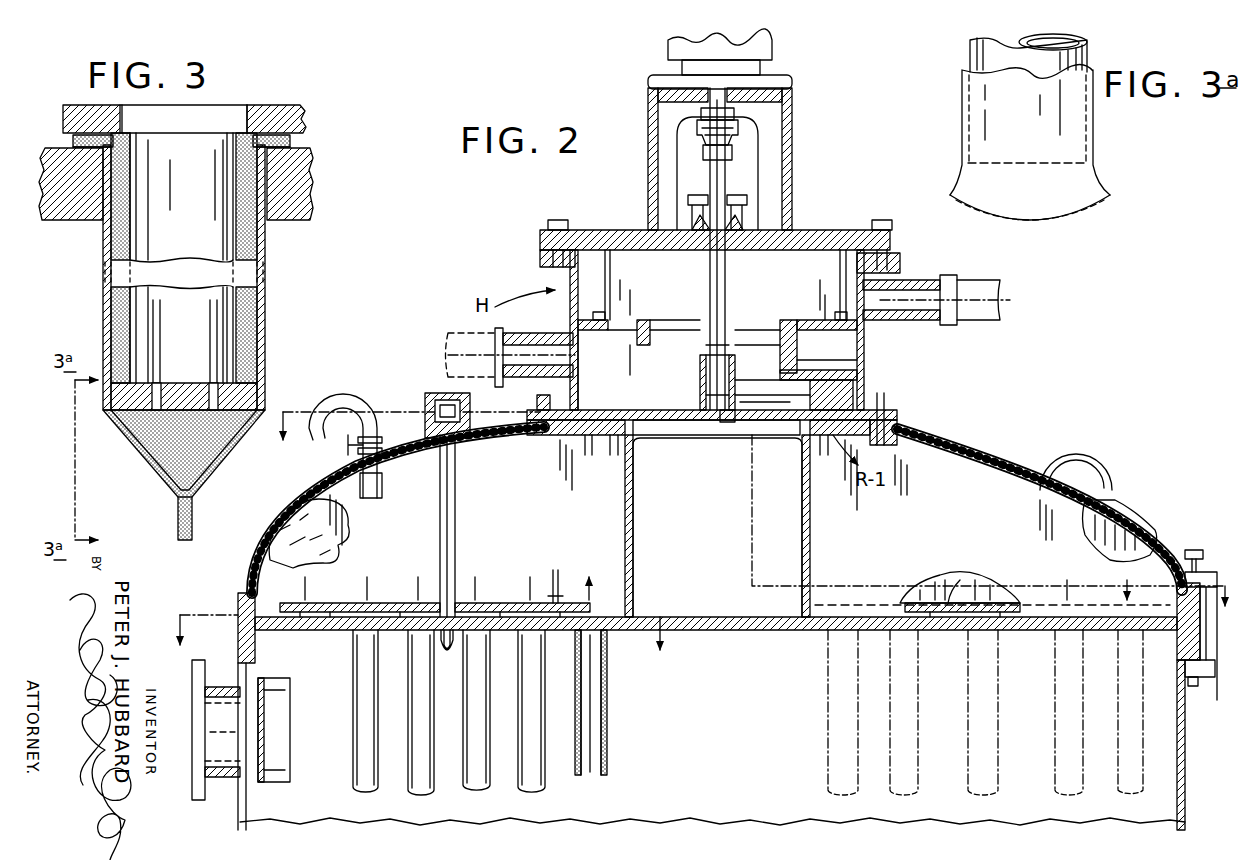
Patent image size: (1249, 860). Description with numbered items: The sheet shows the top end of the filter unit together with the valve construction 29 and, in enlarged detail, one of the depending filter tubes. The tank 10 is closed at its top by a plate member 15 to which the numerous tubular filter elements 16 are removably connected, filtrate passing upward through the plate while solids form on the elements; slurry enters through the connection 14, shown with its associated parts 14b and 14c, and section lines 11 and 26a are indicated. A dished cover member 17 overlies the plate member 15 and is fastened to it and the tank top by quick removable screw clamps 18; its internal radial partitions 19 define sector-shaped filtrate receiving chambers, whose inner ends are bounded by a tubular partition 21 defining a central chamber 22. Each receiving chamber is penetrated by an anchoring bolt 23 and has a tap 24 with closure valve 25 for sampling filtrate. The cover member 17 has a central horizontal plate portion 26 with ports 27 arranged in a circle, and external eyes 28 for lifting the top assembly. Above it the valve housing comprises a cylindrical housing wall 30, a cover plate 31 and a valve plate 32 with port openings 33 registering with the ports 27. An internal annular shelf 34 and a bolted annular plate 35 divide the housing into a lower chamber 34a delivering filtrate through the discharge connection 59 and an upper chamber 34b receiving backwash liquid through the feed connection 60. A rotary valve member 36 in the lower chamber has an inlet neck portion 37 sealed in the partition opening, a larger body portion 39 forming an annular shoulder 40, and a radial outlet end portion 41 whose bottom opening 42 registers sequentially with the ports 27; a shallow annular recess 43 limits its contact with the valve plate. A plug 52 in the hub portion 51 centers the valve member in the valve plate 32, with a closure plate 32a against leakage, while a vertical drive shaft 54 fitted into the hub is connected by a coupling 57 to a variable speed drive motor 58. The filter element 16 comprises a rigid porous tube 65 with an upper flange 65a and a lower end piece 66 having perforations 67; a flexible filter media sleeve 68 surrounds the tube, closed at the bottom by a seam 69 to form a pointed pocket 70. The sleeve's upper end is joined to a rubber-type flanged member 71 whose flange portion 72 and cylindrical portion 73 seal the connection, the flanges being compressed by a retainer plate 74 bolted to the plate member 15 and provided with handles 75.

In FIG. 2, the vessel tank 10 is at (1197, 730).
In FIG. 2, the section line 11 is at (424, 619).
In FIG. 2, the connection 14 is at (228, 778).
In FIG. 2, the pipe sleeve 14b is at (275, 678).
In FIG. 2, the sleeve flange 14c is at (275, 782).
In FIG. 2, the plate member 15 is at (733, 630).
In FIG. 3, the tubular filter element 16 is at (270, 352).
In FIG. 2, the tubular filter element 16 is at (525, 768).
In FIG. 2, the dished cover member 17 is at (985, 452).
In FIG. 2, the screw clamp 18 is at (1207, 677).
In FIG. 2, the radial partition 19 is at (335, 540).
In FIG. 2, the tubular partition 21 is at (634, 486).
In FIG. 2, the central chamber 22 is at (708, 545).
In FIG. 2, the anchoring bolt 23 is at (455, 525).
In FIG. 2, the tap 24 is at (356, 400).
In FIG. 2, the closure valve 25 is at (348, 450).
In FIG. 2, the central horizontal plate portion 26 is at (898, 428).
In FIG. 2, the flange ring 26a is at (540, 422).
In FIG. 2, the port 27 is at (823, 432).
In FIG. 2, the external eye 28 is at (1108, 470).
In FIG. 2, the valve construction 29 is at (898, 232).
In FIG. 2, the cylindrical housing wall 30 is at (570, 318).
In FIG. 2, the cover plate 31 is at (805, 232).
In FIG. 2, the valve plate 32 is at (542, 412).
In FIG. 2, the closure plate 32a is at (710, 435).
In FIG. 2, the port opening 33 is at (828, 415).
In FIG. 2, the internal annular shelf 34 is at (860, 328).
In FIG. 2, the lower chamber 34a is at (618, 398).
In FIG. 2, the upper chamber 34b is at (685, 292).
In FIG. 2, the annular plate 35 is at (600, 330).
In FIG. 2, the rotary valve member 36 is at (798, 366).
In FIG. 2, the inlet neck portion 37 is at (640, 330).
In FIG. 2, the body portion 39 is at (805, 320).
In FIG. 2, the annular shoulder 40 is at (838, 370).
In FIG. 2, the outlet end portion 41 is at (855, 383).
In FIG. 2, the bottom opening 42 is at (835, 400).
In FIG. 2, the shallow annular recess 43 is at (780, 404).
In FIG. 2, the hub portion 51 is at (725, 368).
In FIG. 2, the plug 52 is at (710, 416).
In FIG. 2, the vertical drive shaft 54 is at (720, 182).
In FIG. 2, the coupling 57 is at (705, 136).
In FIG. 2, the variable speed drive motor 58 is at (772, 47).
In FIG. 2, the discharge connection 59 is at (525, 332).
In FIG. 2, the feed connection 60 is at (905, 283).
In FIG. 3, the rigid tube 65 is at (240, 172).
In FIG. 3A, the rigid tube 65 is at (1088, 55).
In FIG. 3, the flange 65a is at (75, 140).
In FIG. 3, the end piece 66 is at (200, 383).
In FIG. 3, the perforation 67 is at (210, 432).
In FIG. 3, the sleeve 68 is at (257, 303).
In FIG. 3A, the sleeve 68 is at (963, 100).
In FIG. 3, the seam 69 is at (193, 515).
In FIG. 3A, the seam 69 is at (1052, 222).
In FIG. 3, the pocket 70 is at (203, 450).
In FIG. 3, the flanged member 71 is at (268, 172).
In FIG. 3, the flange portion 72 is at (285, 140).
In FIG. 3, the cylindrical portion 73 is at (263, 215).
In FIG. 3, the retainer plate 74 is at (268, 110).
In FIG. 2, the retainer plate 74 is at (500, 603).
In FIG. 2, the handle 75 is at (556, 570).